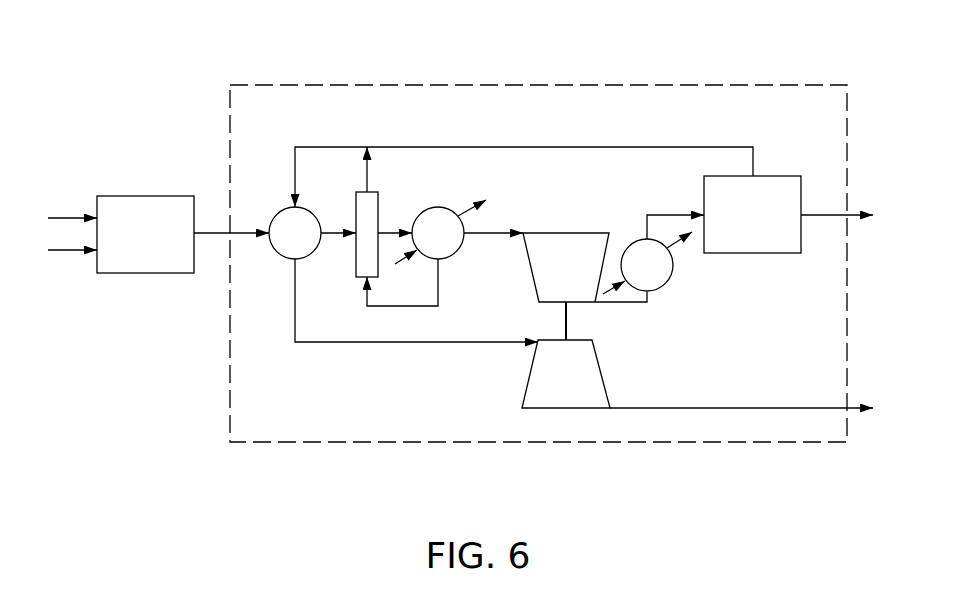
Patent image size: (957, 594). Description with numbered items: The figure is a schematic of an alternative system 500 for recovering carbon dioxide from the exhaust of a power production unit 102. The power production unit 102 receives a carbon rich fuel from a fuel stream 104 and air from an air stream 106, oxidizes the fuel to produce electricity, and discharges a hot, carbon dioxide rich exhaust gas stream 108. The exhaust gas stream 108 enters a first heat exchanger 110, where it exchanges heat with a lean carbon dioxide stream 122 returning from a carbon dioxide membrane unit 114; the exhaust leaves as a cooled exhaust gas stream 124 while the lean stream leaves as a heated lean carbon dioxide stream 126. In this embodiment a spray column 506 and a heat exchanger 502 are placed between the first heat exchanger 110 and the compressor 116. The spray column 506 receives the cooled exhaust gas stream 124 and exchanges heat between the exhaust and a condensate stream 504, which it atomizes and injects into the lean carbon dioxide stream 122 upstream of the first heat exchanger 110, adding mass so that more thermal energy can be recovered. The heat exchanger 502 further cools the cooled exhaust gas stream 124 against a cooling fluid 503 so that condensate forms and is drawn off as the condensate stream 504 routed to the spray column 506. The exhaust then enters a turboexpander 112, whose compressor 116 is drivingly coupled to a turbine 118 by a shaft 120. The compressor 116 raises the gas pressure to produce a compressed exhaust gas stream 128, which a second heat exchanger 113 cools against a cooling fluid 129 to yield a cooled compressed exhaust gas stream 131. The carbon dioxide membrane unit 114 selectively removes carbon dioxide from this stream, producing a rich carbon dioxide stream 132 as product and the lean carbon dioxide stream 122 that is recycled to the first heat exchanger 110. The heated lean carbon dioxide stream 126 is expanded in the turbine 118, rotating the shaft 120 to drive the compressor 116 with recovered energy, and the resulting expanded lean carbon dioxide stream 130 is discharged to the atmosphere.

The system 500 is at (523, 55).
The power production unit 102 is at (128, 246).
The fuel stream 104 is at (62, 218).
The air stream 106 is at (62, 250).
The exhaust gas stream 108 is at (217, 233).
The first heat exchanger 110 is at (279, 246).
The turboexpander 112 is at (502, 377).
The second heat exchanger 113 is at (631, 278).
The carbon dioxide membrane unit 114 is at (736, 228).
The compressor 116 is at (549, 280).
The turbine 118 is at (549, 388).
The shaft 120 is at (566, 322).
The lean carbon dioxide stream 122 is at (538, 147).
The cooled exhaust gas stream 124 is at (333, 233).
The heated lean carbon dioxide stream 126 is at (418, 343).
The compressed exhaust gas stream 128 is at (647, 302).
The cooling fluid 129 is at (603, 294).
The expanded lean carbon dioxide stream 130 is at (710, 408).
The cooled compressed exhaust gas stream 131 is at (667, 214).
The rich carbon dioxide stream 132 is at (823, 215).
The heat exchanger 502 is at (422, 246).
The cooling fluid 503 is at (395, 264).
The condensate stream 504 is at (439, 284).
The spray column 506 is at (378, 202).